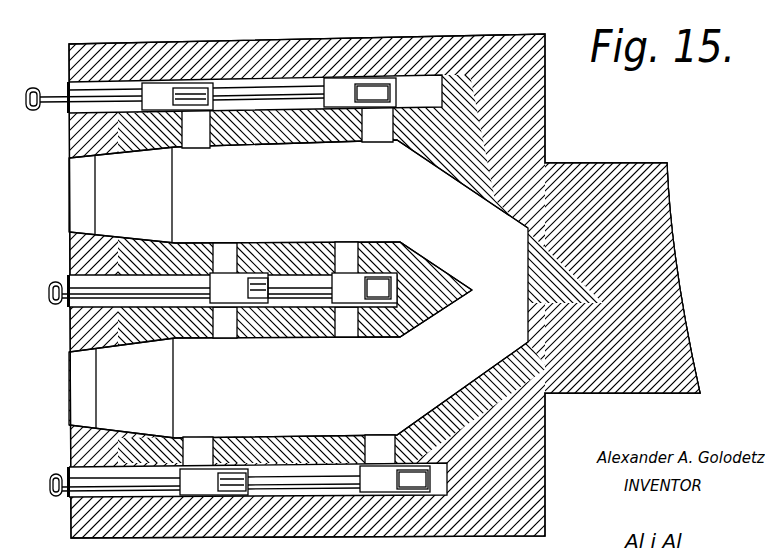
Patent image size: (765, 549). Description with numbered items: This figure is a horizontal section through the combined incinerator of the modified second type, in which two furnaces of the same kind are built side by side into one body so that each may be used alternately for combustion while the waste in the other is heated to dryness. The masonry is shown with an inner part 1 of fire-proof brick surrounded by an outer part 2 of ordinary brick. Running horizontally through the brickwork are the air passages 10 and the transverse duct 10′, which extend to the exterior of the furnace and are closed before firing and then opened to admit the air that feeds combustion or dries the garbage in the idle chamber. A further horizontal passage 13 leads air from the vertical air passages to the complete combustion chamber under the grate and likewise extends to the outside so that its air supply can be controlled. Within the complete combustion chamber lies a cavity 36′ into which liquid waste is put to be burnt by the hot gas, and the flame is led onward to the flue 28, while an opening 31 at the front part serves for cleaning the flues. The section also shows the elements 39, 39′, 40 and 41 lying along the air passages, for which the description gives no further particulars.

The inner part 1 is at (382, 285).
The outer part 2 is at (382, 285).
The horizontal passage 10 is at (241, 94).
The transverse duct 10′ is at (229, 288).
The horizontal passage 13 is at (200, 136).
The flue 28 is at (298, 289).
The opening 31 is at (66, 178).
The cavity 36′ is at (298, 215).
The slide block 39 is at (286, 286).
The slide block insert 39′ is at (195, 88).
The end washer 40 is at (69, 86).
The key handle 41 is at (56, 101).